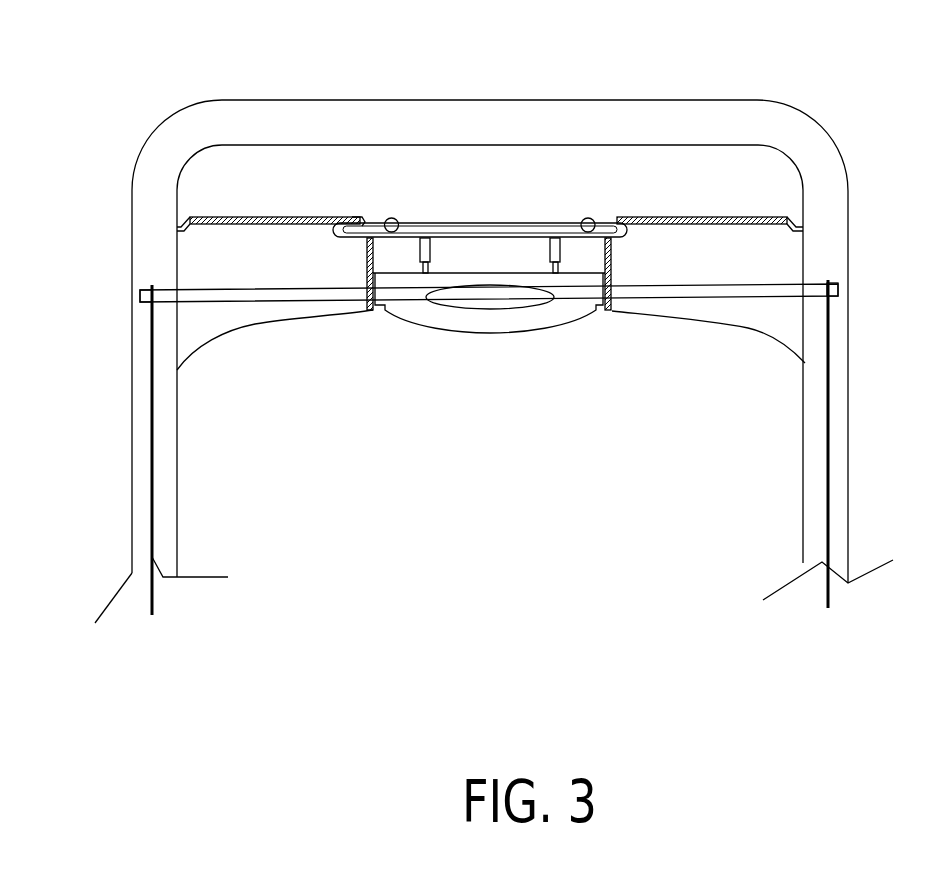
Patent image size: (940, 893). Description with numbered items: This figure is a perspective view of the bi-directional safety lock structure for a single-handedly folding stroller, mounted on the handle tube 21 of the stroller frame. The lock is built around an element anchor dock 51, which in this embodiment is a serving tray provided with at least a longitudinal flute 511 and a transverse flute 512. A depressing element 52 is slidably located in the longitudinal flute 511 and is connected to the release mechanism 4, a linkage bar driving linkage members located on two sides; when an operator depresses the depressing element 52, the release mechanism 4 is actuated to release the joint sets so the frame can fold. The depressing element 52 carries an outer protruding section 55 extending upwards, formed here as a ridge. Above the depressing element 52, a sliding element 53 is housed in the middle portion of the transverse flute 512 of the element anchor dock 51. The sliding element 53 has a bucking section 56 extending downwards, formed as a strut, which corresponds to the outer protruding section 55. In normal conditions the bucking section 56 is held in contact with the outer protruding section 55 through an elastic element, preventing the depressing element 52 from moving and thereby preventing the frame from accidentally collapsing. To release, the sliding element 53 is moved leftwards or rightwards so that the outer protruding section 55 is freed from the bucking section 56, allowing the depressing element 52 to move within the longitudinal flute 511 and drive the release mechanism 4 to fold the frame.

The handle tube 21 is at (833, 458).
The release mechanism 4 is at (245, 297).
The element anchor dock 51 is at (692, 216).
The transverse flute 512 is at (340, 218).
The sliding element 53 is at (472, 223).
The outer protruding section 55 is at (418, 262).
The bucking section 56 is at (608, 250).
The longitudinal flute 511 is at (383, 265).
The depressing element 52 is at (504, 325).